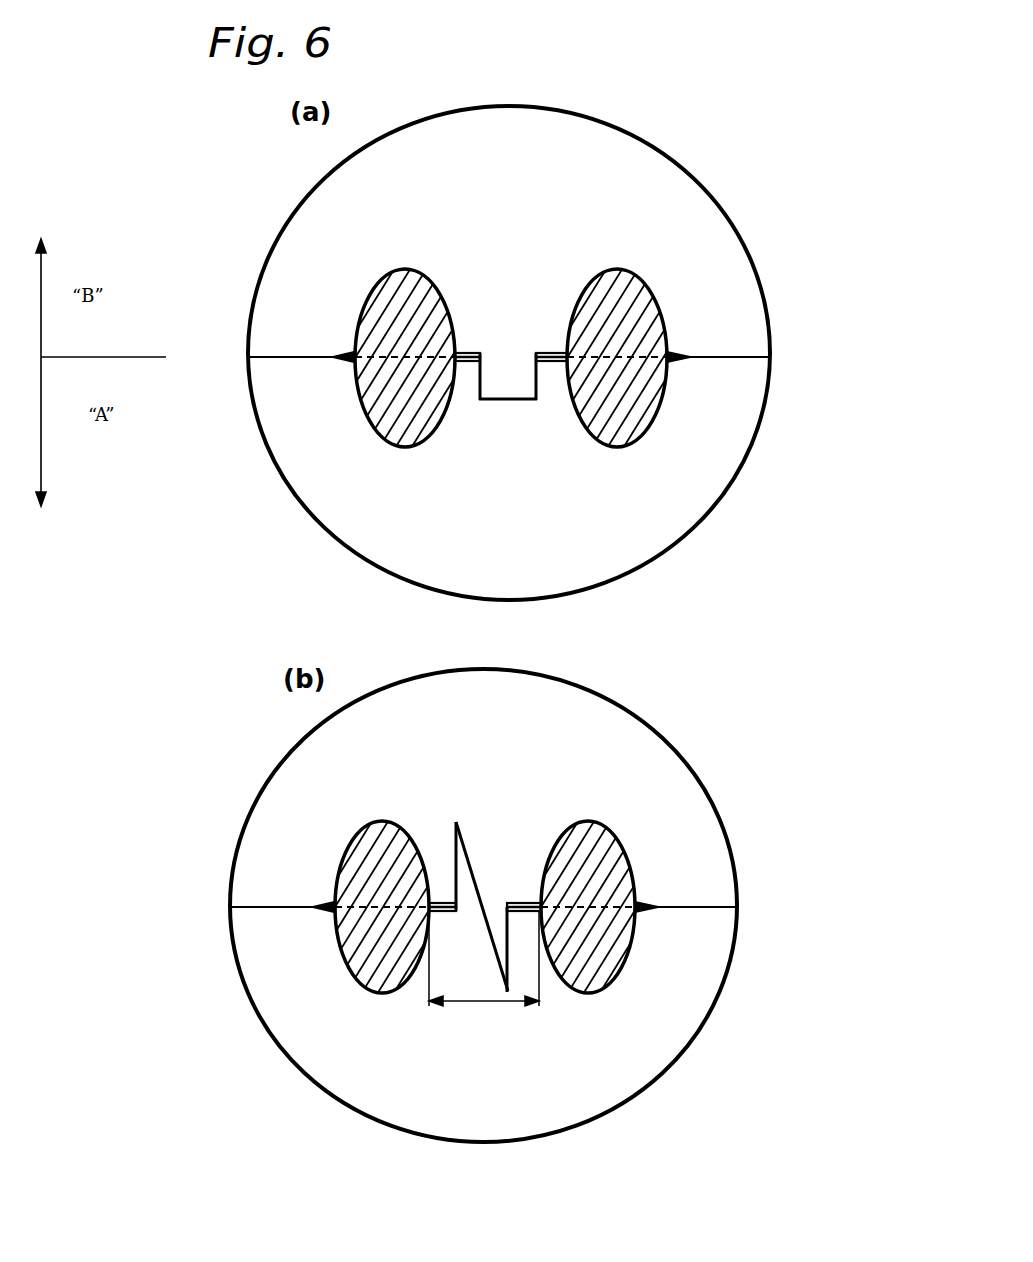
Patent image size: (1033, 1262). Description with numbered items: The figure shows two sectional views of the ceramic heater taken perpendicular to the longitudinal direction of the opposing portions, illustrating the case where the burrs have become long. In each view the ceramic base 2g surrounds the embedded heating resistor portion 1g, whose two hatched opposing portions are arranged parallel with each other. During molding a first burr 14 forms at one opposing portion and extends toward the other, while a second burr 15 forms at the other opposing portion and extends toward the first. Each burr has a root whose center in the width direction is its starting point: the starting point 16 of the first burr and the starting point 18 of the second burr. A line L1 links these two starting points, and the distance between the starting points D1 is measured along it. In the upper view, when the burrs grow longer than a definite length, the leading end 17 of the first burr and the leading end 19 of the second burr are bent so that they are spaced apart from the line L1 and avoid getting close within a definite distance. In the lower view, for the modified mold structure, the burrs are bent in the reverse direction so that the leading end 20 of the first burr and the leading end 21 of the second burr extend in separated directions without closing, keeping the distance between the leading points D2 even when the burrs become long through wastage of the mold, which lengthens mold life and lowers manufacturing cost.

The ceramic base 2g is at (695, 187).
The heating resistor portion 1g is at (404, 419).
The first burr 14 is at (455, 351).
The second burr 15 is at (542, 352).
The starting point of the first burr 16 is at (455, 368).
The leading end of the first burr 17 is at (480, 352).
The starting point of the second burr 18 is at (555, 356).
The leading end of the second burr 19 is at (533, 407).
The line L1 is at (387, 343).
The leading end of the first burr 20 is at (455, 823).
The leading end of the second burr 21 is at (503, 993).
The distance between the starting points D1 is at (470, 1003).
The distance between the leading points D2 is at (483, 882).